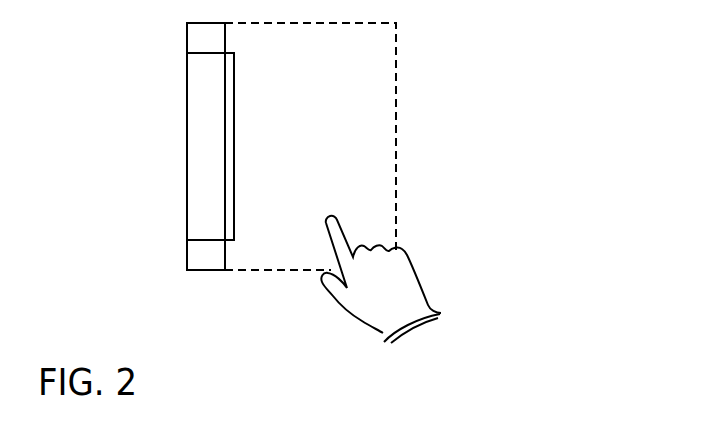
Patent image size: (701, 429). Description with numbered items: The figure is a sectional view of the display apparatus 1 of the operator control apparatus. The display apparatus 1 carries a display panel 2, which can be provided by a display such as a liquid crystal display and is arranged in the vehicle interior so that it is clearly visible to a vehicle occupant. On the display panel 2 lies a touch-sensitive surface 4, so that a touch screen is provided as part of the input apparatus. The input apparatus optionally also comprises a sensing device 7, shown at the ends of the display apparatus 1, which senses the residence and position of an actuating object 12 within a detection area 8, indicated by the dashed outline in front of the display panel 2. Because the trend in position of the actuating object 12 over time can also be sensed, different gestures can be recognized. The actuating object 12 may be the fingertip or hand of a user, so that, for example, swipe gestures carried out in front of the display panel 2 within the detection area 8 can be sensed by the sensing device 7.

The display apparatus 1 is at (200, 138).
The display panel 2 is at (225, 210).
The touch-sensitive surface 4 is at (233, 83).
The sensing device 7 is at (200, 42).
The detection area 8 is at (338, 158).
The actuating object 12 is at (332, 231).